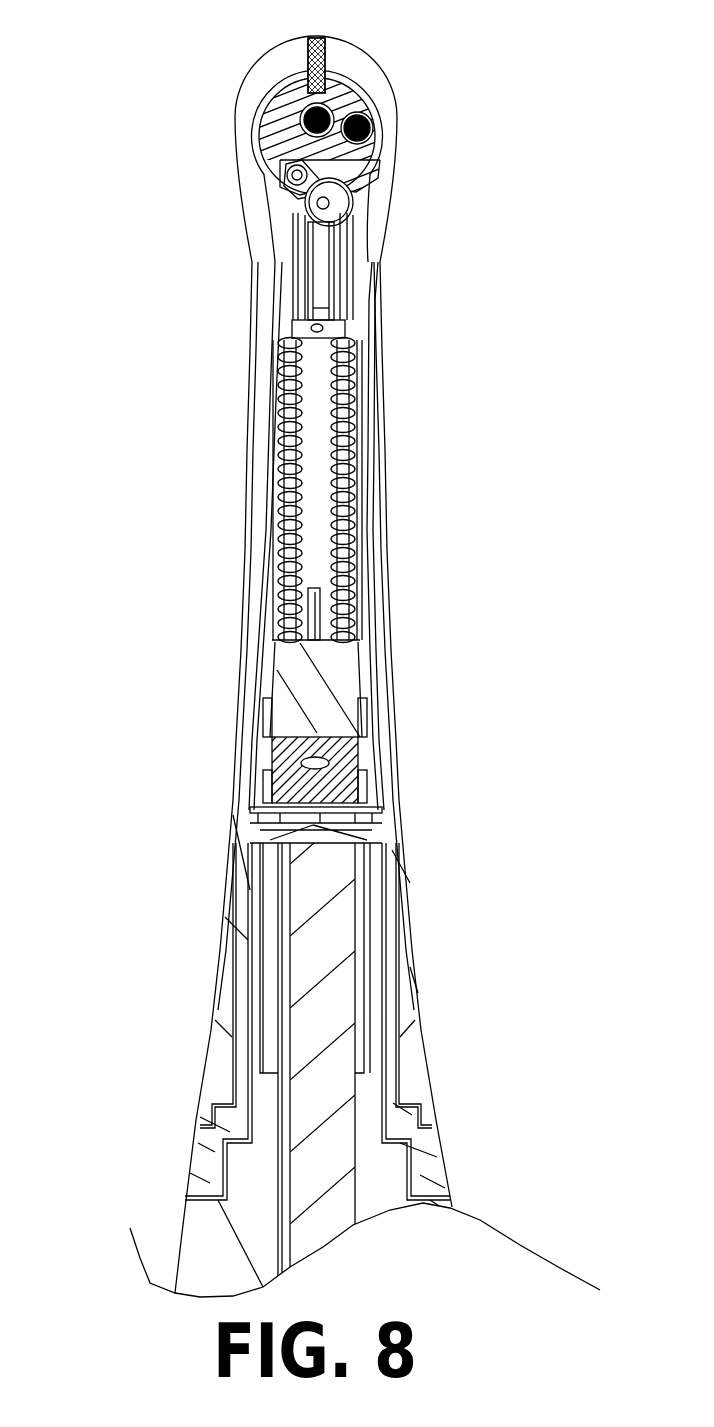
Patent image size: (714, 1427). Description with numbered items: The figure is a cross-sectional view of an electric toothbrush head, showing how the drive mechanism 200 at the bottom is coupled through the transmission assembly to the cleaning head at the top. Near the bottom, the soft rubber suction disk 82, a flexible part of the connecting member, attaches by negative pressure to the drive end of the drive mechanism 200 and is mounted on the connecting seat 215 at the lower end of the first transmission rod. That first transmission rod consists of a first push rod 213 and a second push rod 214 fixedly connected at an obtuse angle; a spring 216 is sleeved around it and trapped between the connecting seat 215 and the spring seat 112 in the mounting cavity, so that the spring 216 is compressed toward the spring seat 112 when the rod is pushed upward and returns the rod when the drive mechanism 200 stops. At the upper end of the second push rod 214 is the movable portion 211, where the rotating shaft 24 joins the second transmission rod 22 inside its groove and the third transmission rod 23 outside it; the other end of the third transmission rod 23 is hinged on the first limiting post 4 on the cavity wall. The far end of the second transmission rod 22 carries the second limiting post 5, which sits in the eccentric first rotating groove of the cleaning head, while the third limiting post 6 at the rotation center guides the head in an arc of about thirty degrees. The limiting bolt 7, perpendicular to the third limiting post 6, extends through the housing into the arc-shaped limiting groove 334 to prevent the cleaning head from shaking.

The limiting bolt 7 is at (328, 62).
The third limiting post 6 is at (313, 112).
The limiting groove 334 is at (338, 95).
The second limiting post 5 is at (335, 132).
The second transmission rod 22 is at (342, 167).
The first limiting post 4 is at (287, 173).
The third transmission rod 23 is at (290, 197).
The rotating shaft 24 is at (332, 202).
The movable portion 211 is at (345, 225).
The second push rod 214 is at (320, 273).
The spring seat 112 is at (343, 308).
The first push rod 213 is at (318, 448).
The spring 216 is at (343, 528).
The connecting seat 215 is at (338, 685).
The soft rubber suction disk 82 is at (268, 747).
The drive mechanism 200 is at (335, 990).